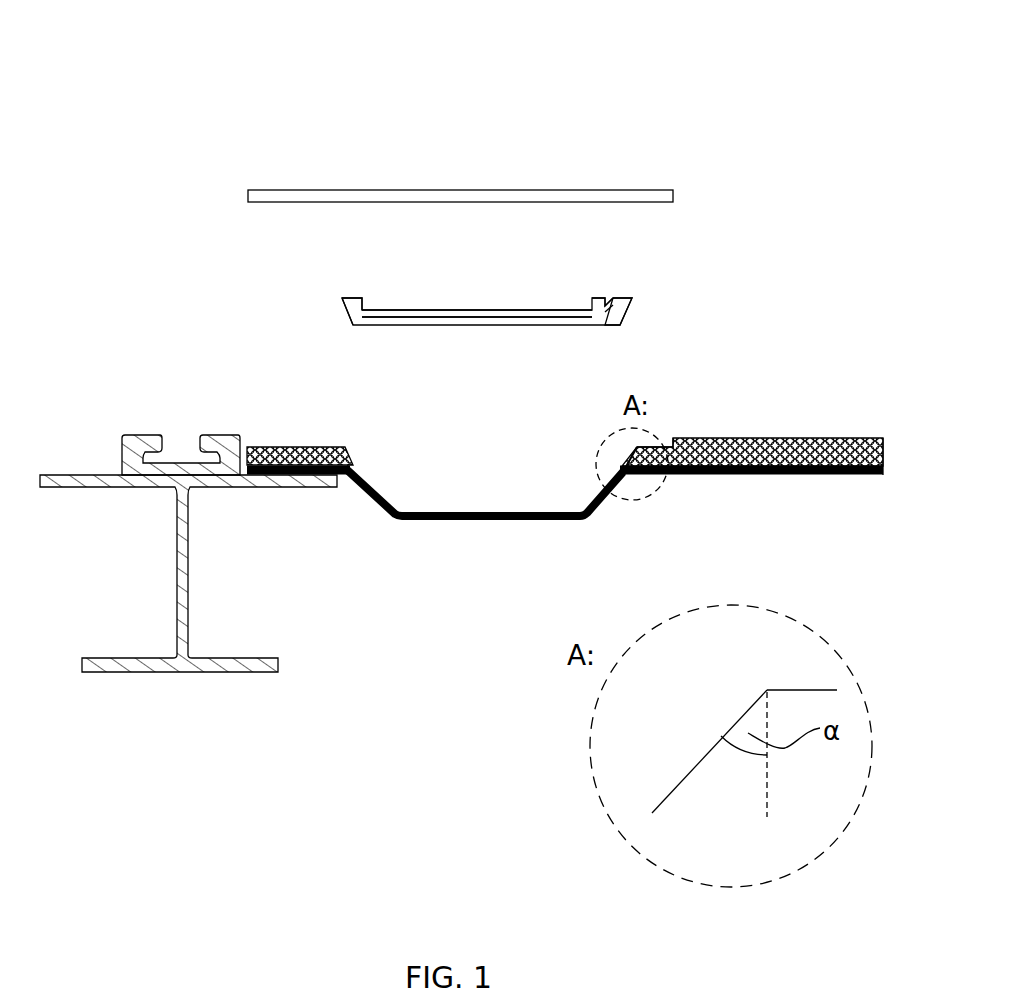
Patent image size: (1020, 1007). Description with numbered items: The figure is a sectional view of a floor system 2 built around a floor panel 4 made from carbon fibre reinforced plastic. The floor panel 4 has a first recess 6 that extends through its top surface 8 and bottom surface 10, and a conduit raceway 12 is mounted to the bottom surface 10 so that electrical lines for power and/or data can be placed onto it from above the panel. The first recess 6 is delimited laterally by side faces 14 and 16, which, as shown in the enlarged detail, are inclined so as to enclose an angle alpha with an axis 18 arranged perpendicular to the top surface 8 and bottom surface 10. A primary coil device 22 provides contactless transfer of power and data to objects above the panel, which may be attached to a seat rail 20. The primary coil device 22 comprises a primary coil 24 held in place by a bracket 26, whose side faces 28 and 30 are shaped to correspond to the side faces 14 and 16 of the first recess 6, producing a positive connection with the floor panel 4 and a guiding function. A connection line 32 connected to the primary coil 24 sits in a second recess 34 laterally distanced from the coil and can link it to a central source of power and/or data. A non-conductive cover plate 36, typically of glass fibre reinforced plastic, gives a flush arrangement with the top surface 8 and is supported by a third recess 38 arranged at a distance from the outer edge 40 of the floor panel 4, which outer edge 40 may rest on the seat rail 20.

The floor system 2 is at (649, 121).
The floor panel 4 is at (840, 448).
The first recess 6 is at (452, 439).
The top surface 8 is at (782, 432).
The bottom surface 10 is at (808, 483).
The conduit raceway 12 is at (592, 518).
The side face 14 is at (363, 460).
The side face 16 is at (617, 462).
The axis 18 is at (767, 790).
The seat rail 20 is at (190, 565).
The primary coil device 22 is at (648, 295).
The primary coil 24 is at (450, 310).
The bracket 26 is at (360, 303).
The side face 28 is at (337, 300).
The side face 30 is at (633, 318).
The connection line 32 is at (612, 305).
The second recess 34 is at (608, 296).
The cover plate 36 is at (487, 193).
The third recess 38 is at (668, 431).
The outer edge 40 is at (248, 437).